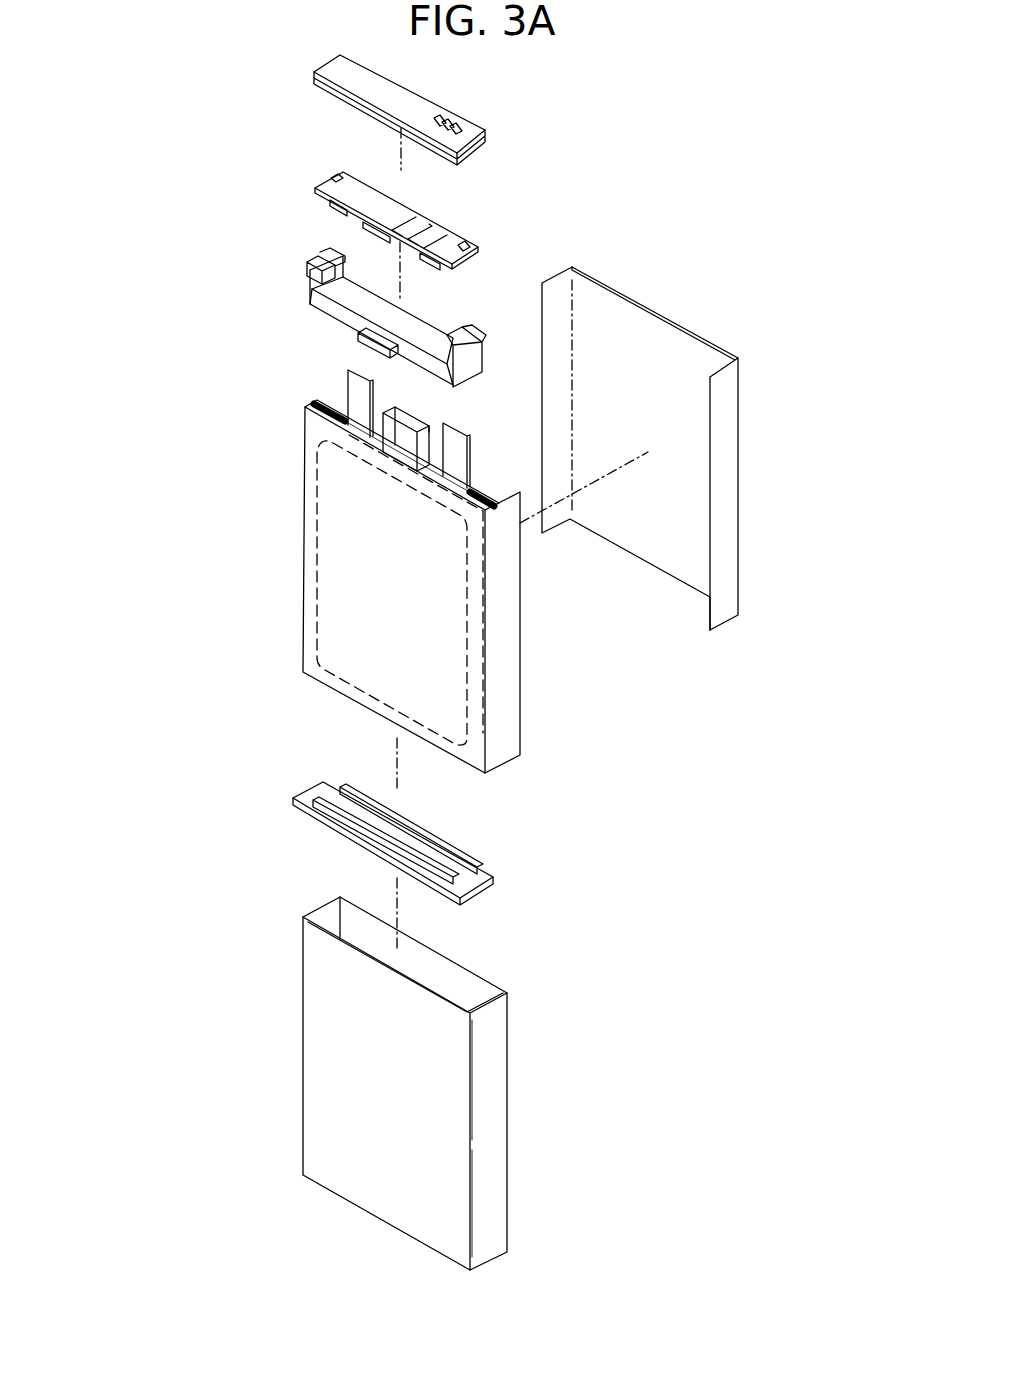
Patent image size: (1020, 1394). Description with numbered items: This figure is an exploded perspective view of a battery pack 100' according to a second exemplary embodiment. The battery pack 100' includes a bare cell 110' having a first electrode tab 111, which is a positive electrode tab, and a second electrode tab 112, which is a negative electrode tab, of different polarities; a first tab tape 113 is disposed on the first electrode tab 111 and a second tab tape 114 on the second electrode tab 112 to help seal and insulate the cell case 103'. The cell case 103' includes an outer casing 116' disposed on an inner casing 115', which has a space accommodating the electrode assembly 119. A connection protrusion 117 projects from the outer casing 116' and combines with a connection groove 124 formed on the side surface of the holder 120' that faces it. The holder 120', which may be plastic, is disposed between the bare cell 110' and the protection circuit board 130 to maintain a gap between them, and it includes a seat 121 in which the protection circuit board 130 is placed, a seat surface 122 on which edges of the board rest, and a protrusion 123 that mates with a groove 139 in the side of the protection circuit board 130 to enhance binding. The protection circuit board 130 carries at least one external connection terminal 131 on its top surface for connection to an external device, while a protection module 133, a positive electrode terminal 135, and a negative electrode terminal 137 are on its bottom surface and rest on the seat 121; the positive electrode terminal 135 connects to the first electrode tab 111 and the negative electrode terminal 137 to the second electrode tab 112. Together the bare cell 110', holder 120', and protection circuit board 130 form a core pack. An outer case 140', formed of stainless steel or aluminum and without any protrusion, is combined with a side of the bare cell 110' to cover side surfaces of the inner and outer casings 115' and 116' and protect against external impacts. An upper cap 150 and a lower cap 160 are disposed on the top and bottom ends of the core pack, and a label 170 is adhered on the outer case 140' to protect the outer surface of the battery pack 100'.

The battery pack 100' is at (233, 504).
The upper cap 150 is at (415, 100).
The protection circuit board 130 is at (394, 211).
The external connection terminal 131 is at (417, 218).
The protection module 133 is at (368, 222).
The positive electrode terminal 135 is at (333, 212).
The negative electrode terminal 137 is at (420, 257).
The groove 139 is at (467, 245).
The holder 120' is at (355, 309).
The seat 121 is at (438, 318).
The seat surface 122 is at (312, 268).
The protrusion 123 is at (325, 258).
The connection groove 124 is at (368, 339).
The bare cell 110' is at (423, 571).
The first electrode tab 111 is at (350, 383).
The second electrode tab 112 is at (450, 440).
The first tab tape 113 is at (347, 420).
The second tab tape 114 is at (467, 488).
The inner casing 115' is at (465, 497).
The outer casing 116' is at (543, 554).
The cell case 103' is at (495, 511).
The connection protrusion 117 is at (405, 443).
The electrode assembly 119 is at (333, 612).
The outer case 140' is at (629, 445).
The lower cap 160 is at (485, 882).
The label 170 is at (495, 1035).